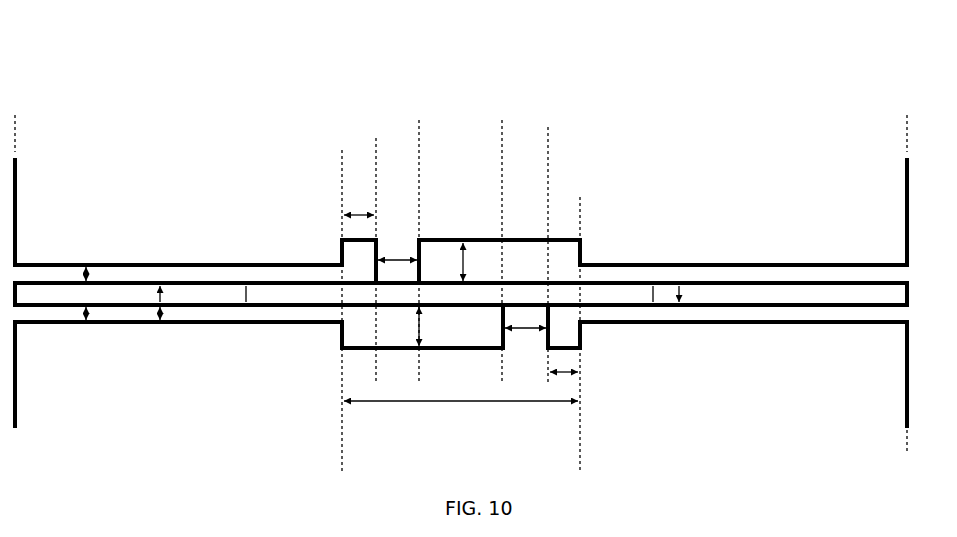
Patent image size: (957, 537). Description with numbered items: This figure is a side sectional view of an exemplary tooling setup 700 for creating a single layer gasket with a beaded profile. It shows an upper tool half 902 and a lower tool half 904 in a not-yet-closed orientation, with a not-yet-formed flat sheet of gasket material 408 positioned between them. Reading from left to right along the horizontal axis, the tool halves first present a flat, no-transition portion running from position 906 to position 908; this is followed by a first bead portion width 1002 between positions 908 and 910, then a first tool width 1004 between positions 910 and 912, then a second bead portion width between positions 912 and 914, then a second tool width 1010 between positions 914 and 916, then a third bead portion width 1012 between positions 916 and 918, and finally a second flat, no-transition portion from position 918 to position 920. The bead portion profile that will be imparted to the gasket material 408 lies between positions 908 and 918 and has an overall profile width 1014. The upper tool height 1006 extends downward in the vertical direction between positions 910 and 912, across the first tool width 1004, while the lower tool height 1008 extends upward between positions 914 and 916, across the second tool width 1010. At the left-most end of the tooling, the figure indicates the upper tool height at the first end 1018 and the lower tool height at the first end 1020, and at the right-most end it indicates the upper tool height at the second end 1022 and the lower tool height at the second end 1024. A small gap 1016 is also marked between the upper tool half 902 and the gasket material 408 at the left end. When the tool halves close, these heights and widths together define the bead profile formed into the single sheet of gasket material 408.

The load beam assembly 700 is at (700, 85).
The upper tool half 902 is at (886, 248).
The lower tool half 904 is at (886, 358).
The single layer of gasket material 408 is at (733, 297).
The left end of first flat portion 906 is at (15, 141).
The start of first bead portion 908 is at (342, 150).
The start of first tool width 910 is at (376, 138).
The start of second bead portion 912 is at (419, 120).
The start of second tool width 914 is at (502, 120).
The start of third bead portion 916 is at (549, 163).
The start of second flat portion 918 is at (581, 201).
The right end of second flat portion 920 is at (907, 142).
The first bead portion width 1002 is at (368, 215).
The first tool width 1004 is at (400, 258).
The upper tool height 1006 is at (463, 262).
The lower tool height 1008 is at (422, 329).
The second tool width 1010 is at (527, 334).
The third bead portion width 1012 is at (566, 372).
The profile width 1014 is at (412, 403).
The upper gap 1016 is at (86, 262).
The upper tool height at first end 1018 is at (245, 263).
The lower tool height at first end 1020 is at (160, 313).
The upper tool height at second end 1022 is at (653, 263).
The lower tool height at second end 1024 is at (679, 325).